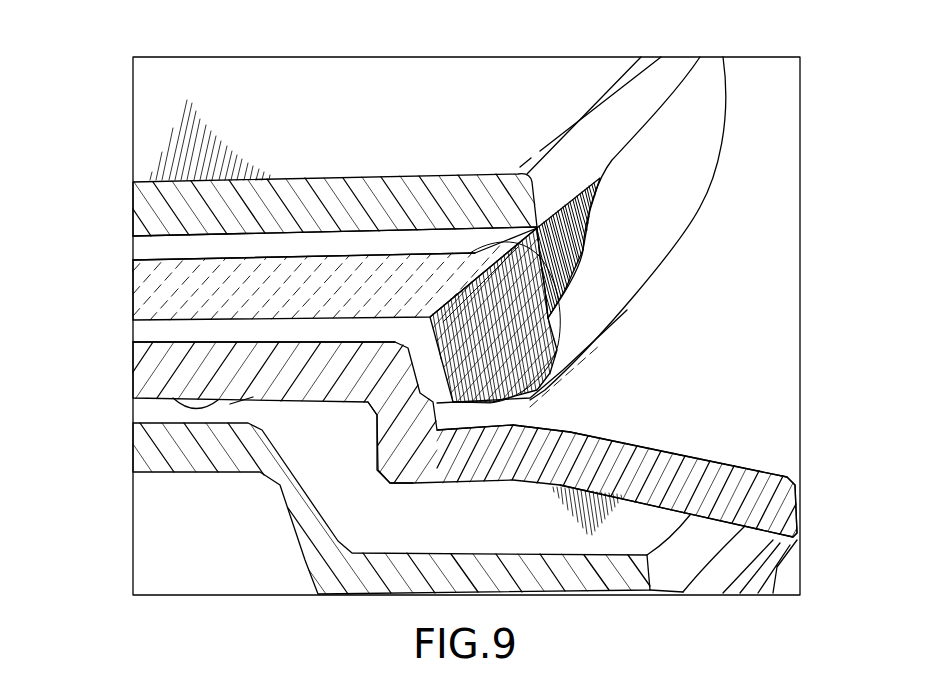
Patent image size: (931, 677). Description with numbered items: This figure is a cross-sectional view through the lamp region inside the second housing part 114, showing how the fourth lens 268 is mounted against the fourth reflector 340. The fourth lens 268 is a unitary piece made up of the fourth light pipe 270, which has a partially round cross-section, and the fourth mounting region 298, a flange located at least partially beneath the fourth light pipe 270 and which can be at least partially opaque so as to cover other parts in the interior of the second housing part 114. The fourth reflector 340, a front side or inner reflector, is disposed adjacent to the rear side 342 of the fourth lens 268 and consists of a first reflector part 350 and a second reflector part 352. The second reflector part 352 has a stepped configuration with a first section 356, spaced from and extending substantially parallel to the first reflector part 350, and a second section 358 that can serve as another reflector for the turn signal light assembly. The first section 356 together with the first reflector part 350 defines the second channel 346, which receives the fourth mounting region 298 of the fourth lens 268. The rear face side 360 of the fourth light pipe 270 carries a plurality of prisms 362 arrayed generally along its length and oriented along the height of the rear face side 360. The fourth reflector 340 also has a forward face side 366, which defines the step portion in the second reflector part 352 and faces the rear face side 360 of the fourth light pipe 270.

The second housing part 114 is at (333, 573).
The fourth lens 268 is at (347, 266).
The fourth light pipe 270 is at (668, 233).
The fourth mounting region 298 is at (143, 300).
The fourth reflector 340 is at (437, 98).
The rear side 342 is at (297, 247).
The second channel 346 is at (333, 347).
The first reflector part 350 is at (451, 173).
The second reflector part 352 is at (673, 452).
The first section 356 is at (143, 387).
The second section 358 is at (613, 445).
The rear face side 360 is at (440, 405).
The prisms 362 is at (547, 308).
The forward face side 366 is at (423, 405).